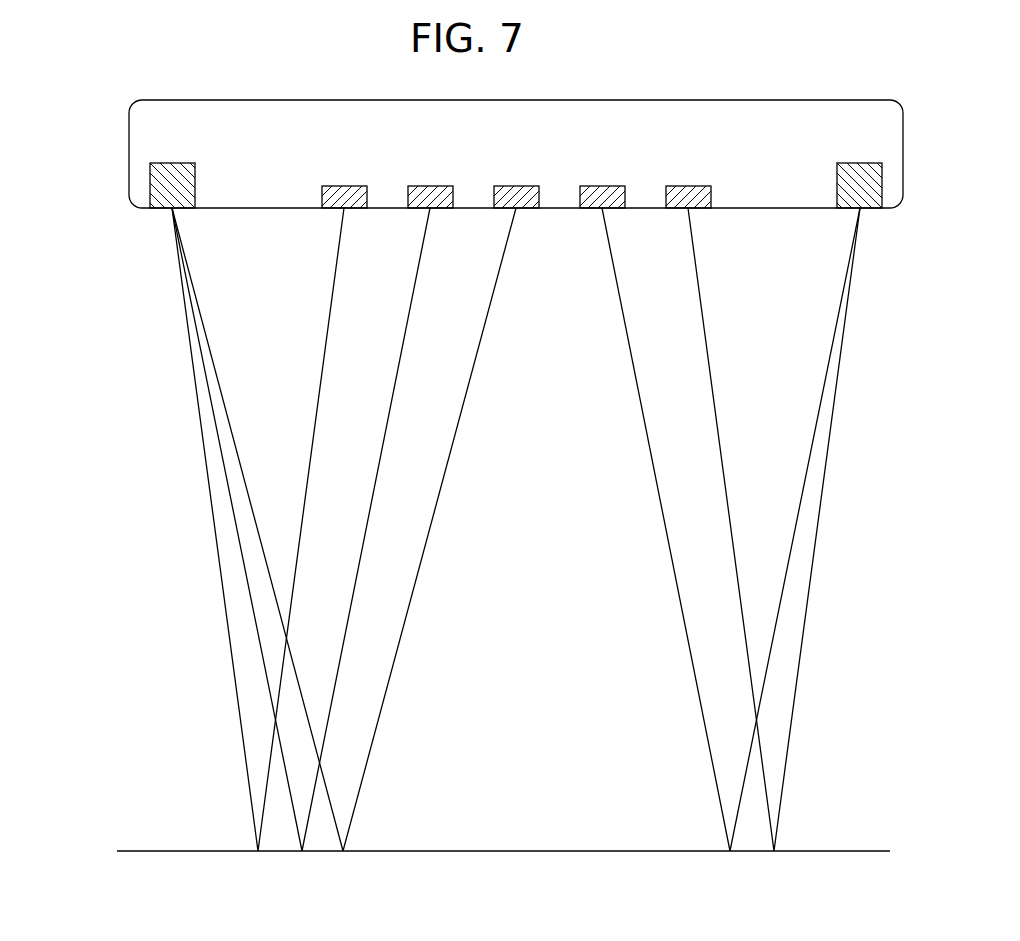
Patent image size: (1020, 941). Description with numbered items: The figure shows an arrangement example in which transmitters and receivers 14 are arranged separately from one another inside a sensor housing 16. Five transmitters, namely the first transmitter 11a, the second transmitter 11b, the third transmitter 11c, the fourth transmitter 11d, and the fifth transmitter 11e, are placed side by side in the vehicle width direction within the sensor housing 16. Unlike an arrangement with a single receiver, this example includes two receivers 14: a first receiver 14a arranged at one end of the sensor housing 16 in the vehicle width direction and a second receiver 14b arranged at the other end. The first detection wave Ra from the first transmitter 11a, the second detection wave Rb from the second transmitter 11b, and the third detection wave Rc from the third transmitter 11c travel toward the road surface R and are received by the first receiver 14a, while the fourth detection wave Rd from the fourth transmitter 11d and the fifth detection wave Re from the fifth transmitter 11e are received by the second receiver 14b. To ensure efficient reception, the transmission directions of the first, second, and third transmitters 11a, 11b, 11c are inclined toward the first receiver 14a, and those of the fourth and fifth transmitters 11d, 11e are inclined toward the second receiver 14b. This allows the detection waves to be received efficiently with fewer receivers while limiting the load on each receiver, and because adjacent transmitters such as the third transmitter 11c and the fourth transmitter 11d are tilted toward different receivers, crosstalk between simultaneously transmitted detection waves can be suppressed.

The sensor housing 16 is at (838, 92).
The receiver 14 is at (553, 197).
The first receiver 14a is at (168, 162).
The second receiver 14b is at (853, 162).
The first transmitter 11a is at (342, 185).
The second transmitter 11b is at (428, 185).
The third transmitter 11c is at (514, 185).
The fourth transmitter 11d is at (600, 185).
The fifth transmitter 11e is at (686, 185).
The first detection wave Ra is at (333, 292).
The second detection wave Rb is at (396, 375).
The third detection wave Rc is at (448, 458).
The fourth detection wave Rd is at (808, 469).
The fifth detection wave Re is at (818, 537).
The road surface R is at (448, 851).